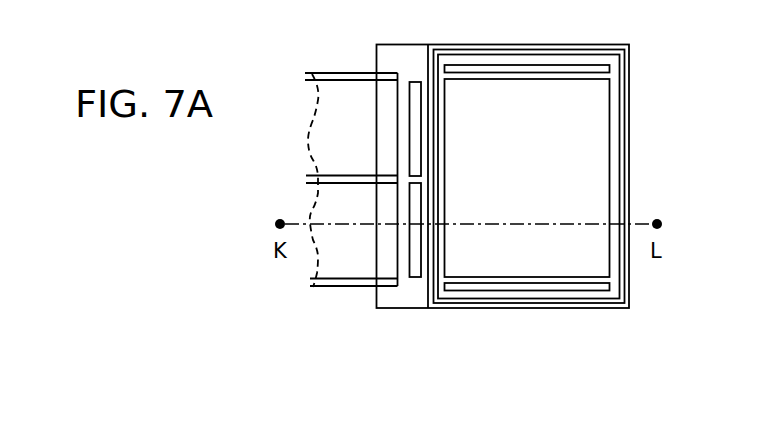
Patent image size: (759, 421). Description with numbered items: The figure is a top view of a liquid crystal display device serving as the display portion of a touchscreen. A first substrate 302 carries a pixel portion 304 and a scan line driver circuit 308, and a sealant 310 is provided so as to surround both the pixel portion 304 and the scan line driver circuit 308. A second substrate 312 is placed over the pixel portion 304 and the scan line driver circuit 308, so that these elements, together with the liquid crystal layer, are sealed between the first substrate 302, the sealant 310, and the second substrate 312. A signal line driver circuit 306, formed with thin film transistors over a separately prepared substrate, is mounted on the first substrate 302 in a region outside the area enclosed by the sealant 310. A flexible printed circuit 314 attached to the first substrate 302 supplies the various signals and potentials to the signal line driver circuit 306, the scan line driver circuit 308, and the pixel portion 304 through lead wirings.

The first substrate 302 is at (488, 216).
The pixel portion 304 is at (527, 178).
The signal line driver circuit 306 is at (415, 220).
The scan line driver circuit 308 is at (573, 64).
The sealant 310 is at (577, 177).
The second substrate 312 is at (536, 335).
The flexible printed circuit (FPC) 314 is at (351, 214).